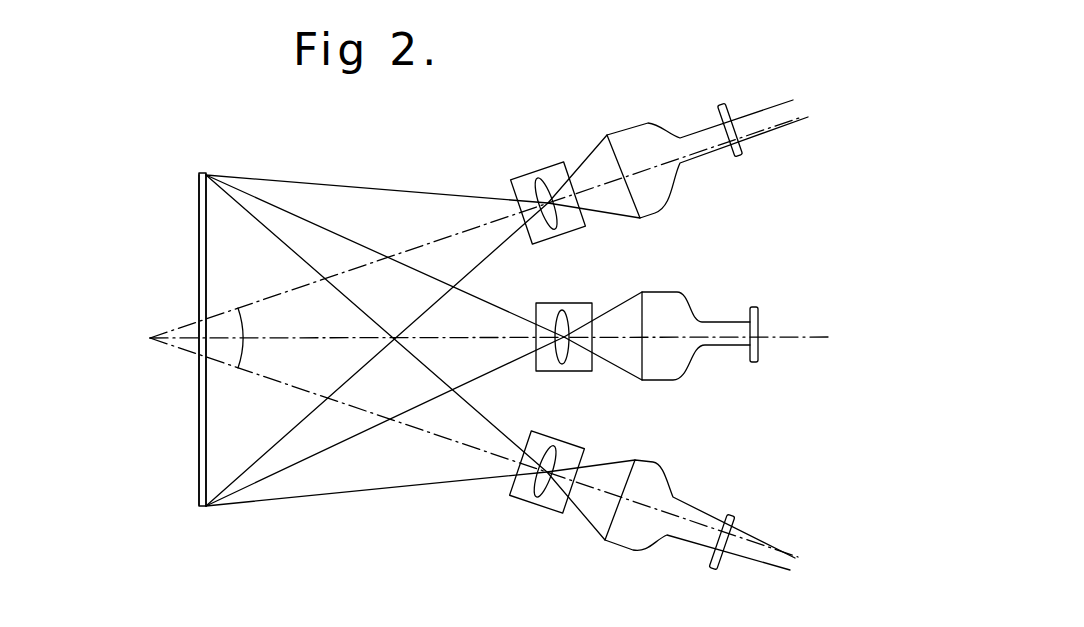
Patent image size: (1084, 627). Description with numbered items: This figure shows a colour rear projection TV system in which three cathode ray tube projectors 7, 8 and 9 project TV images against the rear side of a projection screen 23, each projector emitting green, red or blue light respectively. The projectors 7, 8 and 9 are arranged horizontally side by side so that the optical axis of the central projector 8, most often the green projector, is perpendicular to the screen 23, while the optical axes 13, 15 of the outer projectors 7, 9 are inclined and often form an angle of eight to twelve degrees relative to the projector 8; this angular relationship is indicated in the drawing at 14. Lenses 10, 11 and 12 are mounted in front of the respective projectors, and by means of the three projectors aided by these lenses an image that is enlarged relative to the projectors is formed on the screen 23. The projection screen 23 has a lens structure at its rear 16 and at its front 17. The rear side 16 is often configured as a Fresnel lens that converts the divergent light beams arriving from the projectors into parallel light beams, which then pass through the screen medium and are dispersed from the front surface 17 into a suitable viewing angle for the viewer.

The projector 7 is at (673, 178).
The projector 8 is at (690, 309).
The projector 9 is at (663, 497).
The lens 10 is at (567, 453).
The lens 11 is at (575, 362).
The lens 12 is at (572, 223).
The optical axis 13 is at (405, 427).
The convergence angle 14 is at (193, 303).
The optical axis 15 is at (457, 233).
The rear side 16 is at (206, 438).
The front 17 is at (198, 233).
The projection screen 23 is at (198, 393).